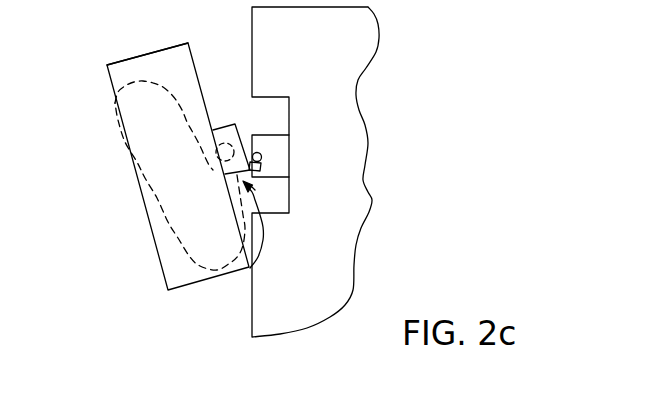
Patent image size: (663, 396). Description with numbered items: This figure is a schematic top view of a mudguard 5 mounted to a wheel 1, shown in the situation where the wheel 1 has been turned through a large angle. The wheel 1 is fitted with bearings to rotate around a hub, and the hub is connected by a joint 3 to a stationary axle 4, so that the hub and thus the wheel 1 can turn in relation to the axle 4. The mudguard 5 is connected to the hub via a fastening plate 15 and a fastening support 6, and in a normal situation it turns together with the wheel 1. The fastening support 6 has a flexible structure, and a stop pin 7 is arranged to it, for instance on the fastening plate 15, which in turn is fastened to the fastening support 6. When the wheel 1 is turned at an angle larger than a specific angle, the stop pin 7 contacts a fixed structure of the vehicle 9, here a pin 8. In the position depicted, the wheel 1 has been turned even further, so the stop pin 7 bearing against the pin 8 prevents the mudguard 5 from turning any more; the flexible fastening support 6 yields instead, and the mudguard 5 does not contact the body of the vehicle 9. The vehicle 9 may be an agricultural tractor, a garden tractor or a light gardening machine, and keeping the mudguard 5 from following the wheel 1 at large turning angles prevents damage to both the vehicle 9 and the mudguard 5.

The wheel 1 is at (118, 127).
The joint 3 is at (243, 135).
The stationary axle 4 is at (277, 145).
The mudguard 5 is at (108, 66).
The fastening support 6 is at (250, 268).
The stop pin 7 is at (255, 190).
The pin 8 is at (261, 156).
The vehicle 9 is at (350, 33).
The fastening plate 15 is at (231, 178).